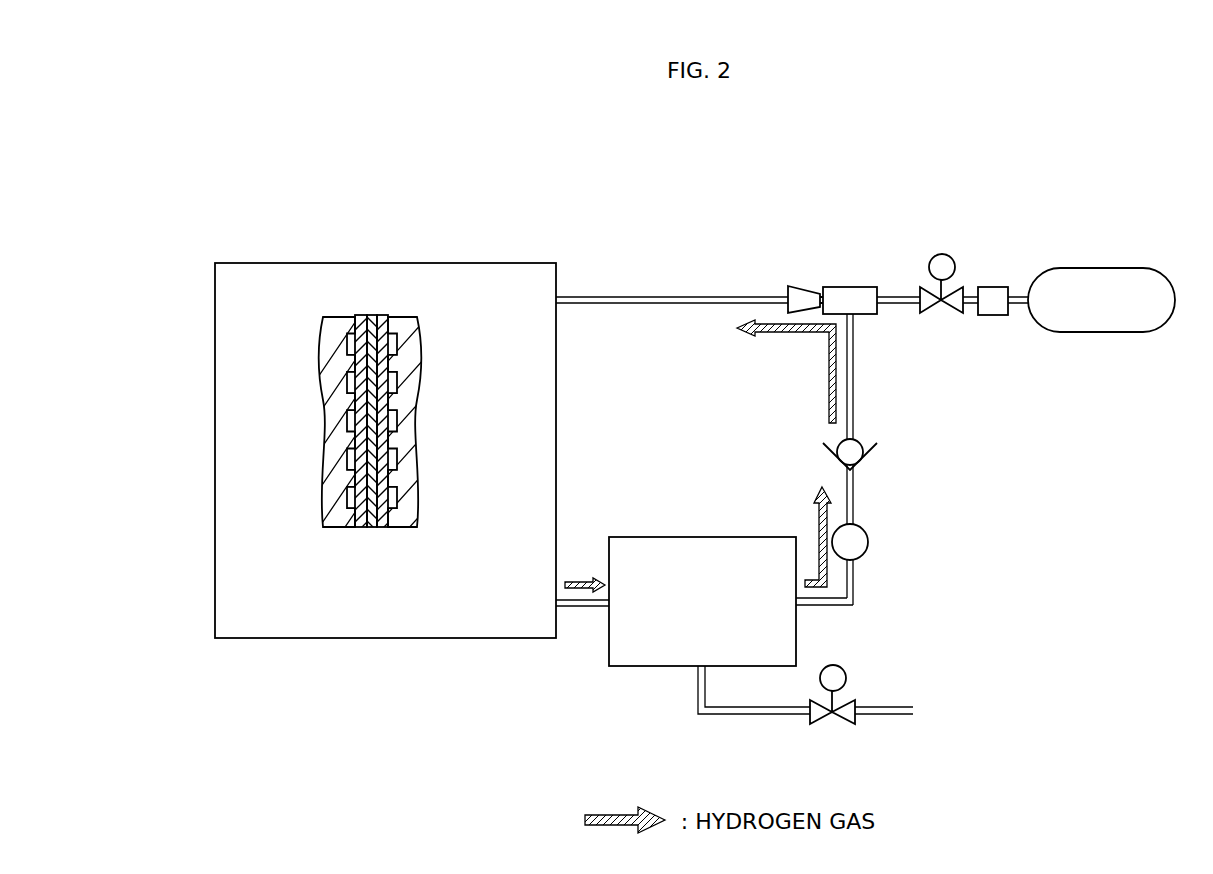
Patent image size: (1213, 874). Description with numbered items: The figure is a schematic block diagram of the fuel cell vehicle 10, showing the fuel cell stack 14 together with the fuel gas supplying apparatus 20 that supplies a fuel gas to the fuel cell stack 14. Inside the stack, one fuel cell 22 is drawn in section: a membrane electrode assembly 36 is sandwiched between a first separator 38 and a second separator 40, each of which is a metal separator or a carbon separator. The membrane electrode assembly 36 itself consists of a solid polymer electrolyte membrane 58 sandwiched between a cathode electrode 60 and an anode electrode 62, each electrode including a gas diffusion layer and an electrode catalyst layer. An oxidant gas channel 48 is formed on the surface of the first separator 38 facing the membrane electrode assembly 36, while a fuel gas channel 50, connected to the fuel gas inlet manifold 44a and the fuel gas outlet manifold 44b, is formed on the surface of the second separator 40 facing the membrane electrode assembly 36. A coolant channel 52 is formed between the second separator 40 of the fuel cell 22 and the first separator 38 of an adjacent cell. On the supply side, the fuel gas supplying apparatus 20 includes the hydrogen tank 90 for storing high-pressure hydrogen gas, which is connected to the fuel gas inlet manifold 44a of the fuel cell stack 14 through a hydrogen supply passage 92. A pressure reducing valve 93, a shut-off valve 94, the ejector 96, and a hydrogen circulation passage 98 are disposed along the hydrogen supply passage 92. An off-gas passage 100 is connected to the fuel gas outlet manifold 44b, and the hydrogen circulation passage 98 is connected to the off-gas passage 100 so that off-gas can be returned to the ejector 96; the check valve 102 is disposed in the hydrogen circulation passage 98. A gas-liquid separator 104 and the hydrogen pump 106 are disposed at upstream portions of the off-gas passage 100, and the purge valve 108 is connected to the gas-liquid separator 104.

The fuel cell vehicle 10 is at (794, 119).
The fuel cell stack 14 is at (481, 252).
The fuel gas supplying apparatus 20 is at (1101, 265).
The fuel cell 22 is at (310, 176).
The membrane electrode assembly 36 is at (371, 401).
The first separator 38 is at (438, 370).
The second separator 40 is at (209, 375).
The fuel gas inlet manifold 44a is at (557, 299).
The fuel gas outlet manifold 44b is at (557, 605).
The oxidant gas channel 48 is at (392, 352).
The fuel gas channel 50 is at (336, 352).
The coolant channel 52 is at (186, 493).
The solid polymer electrolyte membrane 58 is at (372, 528).
The cathode electrode 60 is at (403, 449).
The anode electrode 62 is at (360, 528).
The hydrogen tank 90 is at (1062, 268).
The hydrogen supply passage 92 is at (898, 305).
The pressure reducing valve 93 is at (990, 308).
The shut-off valve 94 is at (951, 256).
The ejector 96 is at (851, 286).
The hydrogen circulation passage 98 is at (856, 397).
The off-gas passage 100 is at (858, 590).
The check valve 102 is at (862, 446).
The gas-liquid separator 104 is at (728, 536).
The hydrogen pump 106 is at (866, 538).
The purge valve 108 is at (846, 668).